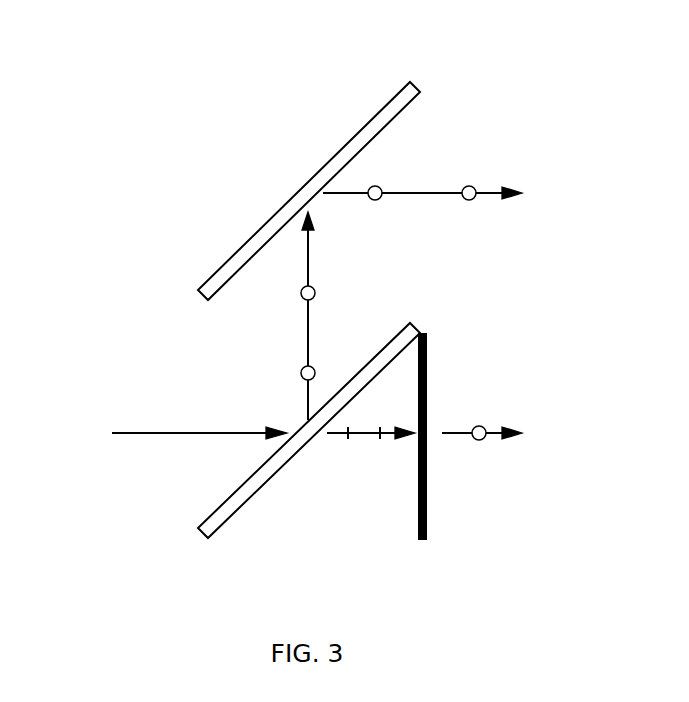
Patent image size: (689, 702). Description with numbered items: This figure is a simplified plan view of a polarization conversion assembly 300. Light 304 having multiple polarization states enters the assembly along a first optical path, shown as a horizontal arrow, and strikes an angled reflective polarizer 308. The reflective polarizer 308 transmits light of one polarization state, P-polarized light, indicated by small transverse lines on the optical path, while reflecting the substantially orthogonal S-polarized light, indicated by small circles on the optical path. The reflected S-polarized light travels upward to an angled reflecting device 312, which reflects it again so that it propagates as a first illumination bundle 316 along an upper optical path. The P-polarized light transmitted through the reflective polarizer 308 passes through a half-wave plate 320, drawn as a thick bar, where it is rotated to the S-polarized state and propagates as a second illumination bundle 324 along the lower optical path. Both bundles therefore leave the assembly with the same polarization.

The polarization conversion assembly 300 is at (58, 118).
The light 304 is at (160, 422).
The reflective polarizer 308 is at (213, 505).
The reflecting device 312 is at (390, 95).
The first illumination bundle 316 is at (480, 167).
The half-wave plate 320 is at (437, 487).
The second illumination bundle 324 is at (497, 403).